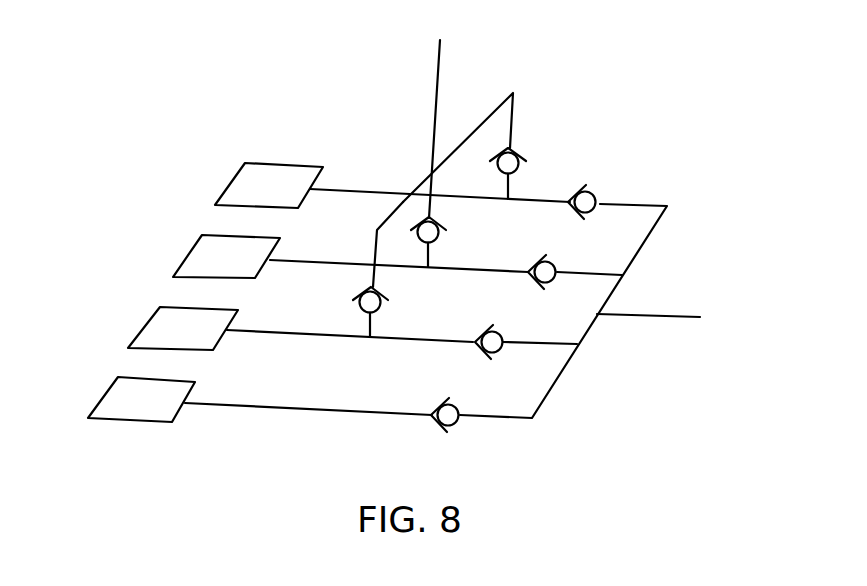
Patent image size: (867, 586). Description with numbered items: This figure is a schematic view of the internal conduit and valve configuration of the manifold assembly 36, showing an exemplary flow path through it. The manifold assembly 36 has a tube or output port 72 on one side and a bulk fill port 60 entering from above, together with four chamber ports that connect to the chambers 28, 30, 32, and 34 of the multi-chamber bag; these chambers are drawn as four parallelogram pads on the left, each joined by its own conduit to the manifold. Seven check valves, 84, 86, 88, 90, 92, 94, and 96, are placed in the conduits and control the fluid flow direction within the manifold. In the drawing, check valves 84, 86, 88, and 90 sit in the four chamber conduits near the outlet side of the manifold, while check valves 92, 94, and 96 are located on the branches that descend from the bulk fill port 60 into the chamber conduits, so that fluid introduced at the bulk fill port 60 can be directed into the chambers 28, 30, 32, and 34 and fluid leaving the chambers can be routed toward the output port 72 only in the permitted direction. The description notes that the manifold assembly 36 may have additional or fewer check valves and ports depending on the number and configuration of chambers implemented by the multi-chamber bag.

The chamber 28 is at (222, 172).
The chamber 30 is at (185, 247).
The chamber 32 is at (138, 315).
The chamber 34 is at (95, 382).
The manifold assembly 36 is at (653, 89).
The bulk fill port 60 is at (452, 66).
The output port 72 is at (669, 327).
The check valve 84 is at (600, 183).
The check valve 86 is at (557, 248).
The check valve 88 is at (508, 323).
The check valve 90 is at (463, 395).
The check valve 92 is at (527, 140).
The check valve 94 is at (412, 210).
The check valve 96 is at (355, 287).